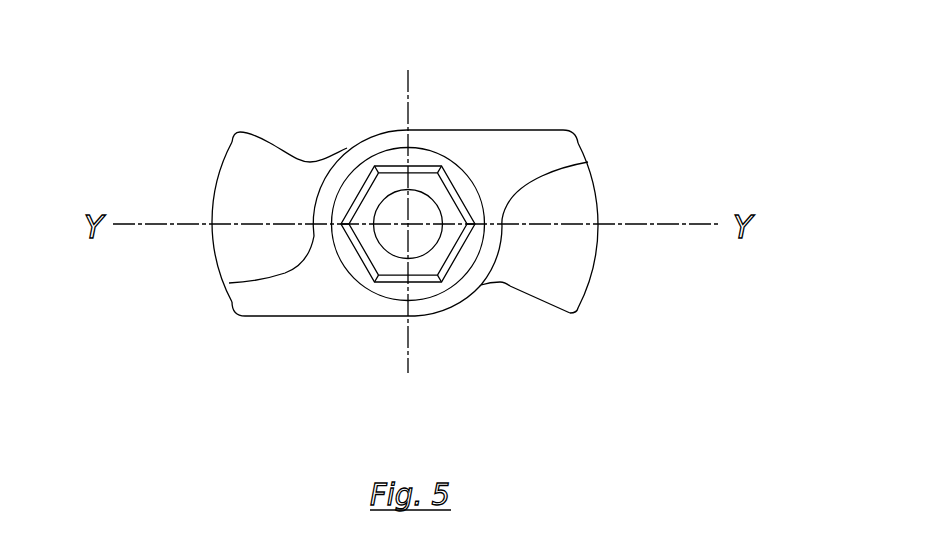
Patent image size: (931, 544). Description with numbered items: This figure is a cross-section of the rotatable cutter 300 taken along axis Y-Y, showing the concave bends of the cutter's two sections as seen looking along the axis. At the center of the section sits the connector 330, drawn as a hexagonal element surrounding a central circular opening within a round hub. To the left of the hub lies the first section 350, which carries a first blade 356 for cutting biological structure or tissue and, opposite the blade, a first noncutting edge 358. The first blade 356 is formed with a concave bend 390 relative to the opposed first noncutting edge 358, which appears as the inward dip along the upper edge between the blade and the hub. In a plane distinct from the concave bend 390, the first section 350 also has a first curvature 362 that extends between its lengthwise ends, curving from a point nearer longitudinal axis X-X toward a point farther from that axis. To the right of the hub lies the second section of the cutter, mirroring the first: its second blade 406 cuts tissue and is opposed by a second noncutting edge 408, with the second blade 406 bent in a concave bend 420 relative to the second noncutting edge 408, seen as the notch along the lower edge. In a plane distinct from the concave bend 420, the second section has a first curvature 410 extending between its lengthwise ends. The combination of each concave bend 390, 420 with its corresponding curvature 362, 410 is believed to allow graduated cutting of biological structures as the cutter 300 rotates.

The rotatable cutter 300 is at (409, 218).
The connector 330 is at (413, 283).
The first section 350 is at (215, 163).
The first blade 356 is at (266, 137).
The first noncutting edge 358 is at (243, 237).
The first curvature 362 is at (238, 262).
The concave bend 390 is at (309, 160).
The second blade 406 is at (543, 302).
The second noncutting edge 408 is at (548, 210).
The first curvature 410 is at (560, 250).
The concave bend 420 is at (507, 287).